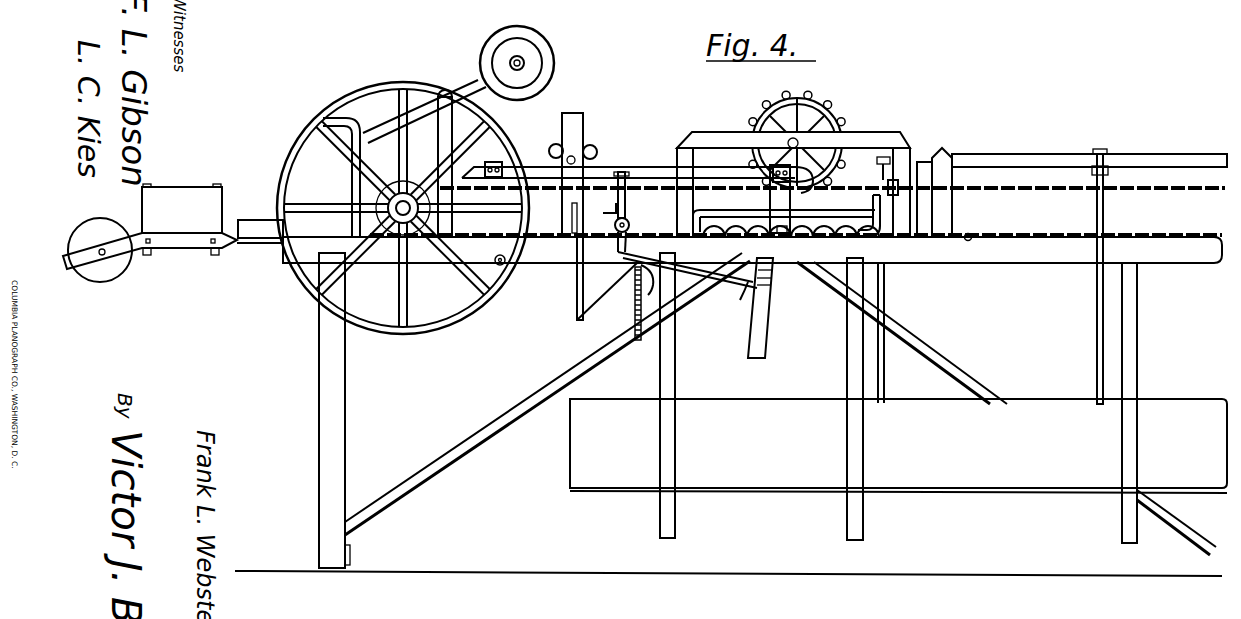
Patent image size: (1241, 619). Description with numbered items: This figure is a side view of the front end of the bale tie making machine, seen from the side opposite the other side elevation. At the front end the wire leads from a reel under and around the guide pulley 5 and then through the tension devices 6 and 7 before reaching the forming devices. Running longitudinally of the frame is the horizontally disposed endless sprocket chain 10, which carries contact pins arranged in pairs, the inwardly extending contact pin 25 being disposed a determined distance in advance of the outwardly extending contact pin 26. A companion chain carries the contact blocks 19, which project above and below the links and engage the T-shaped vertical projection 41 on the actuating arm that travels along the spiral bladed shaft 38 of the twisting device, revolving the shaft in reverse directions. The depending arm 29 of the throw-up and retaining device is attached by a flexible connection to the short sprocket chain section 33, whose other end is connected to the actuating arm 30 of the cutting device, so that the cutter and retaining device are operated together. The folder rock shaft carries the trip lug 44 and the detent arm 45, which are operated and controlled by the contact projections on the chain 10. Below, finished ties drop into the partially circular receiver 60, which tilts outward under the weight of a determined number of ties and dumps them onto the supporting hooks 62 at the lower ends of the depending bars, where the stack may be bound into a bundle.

The guide pulley 5 is at (120, 270).
The tension device 6 is at (180, 197).
The tension device 7 is at (254, 228).
The endless sprocket chain 10 is at (1013, 191).
The contact block 19 is at (899, 180).
The contact pin 25 is at (796, 240).
The contact pin 26 is at (968, 241).
The depending arm 29 is at (577, 290).
The actuating arm 30 is at (646, 288).
The sprocket chain section 33 is at (636, 303).
The spiral bladed shaft 38 is at (730, 228).
The T-shaped vertical projection 41 is at (875, 201).
The trip lug 44 is at (624, 194).
The detent arm 45 is at (748, 285).
The receiver 60 is at (898, 446).
The supporting hook 62 is at (667, 518).